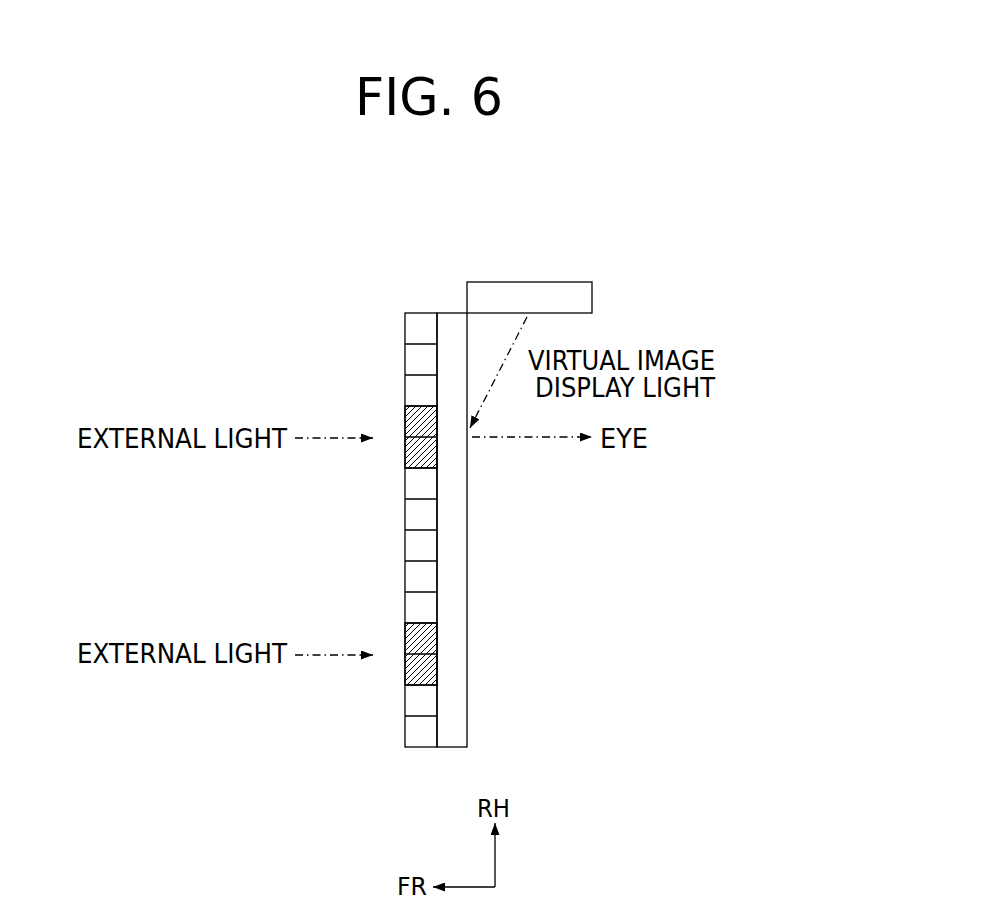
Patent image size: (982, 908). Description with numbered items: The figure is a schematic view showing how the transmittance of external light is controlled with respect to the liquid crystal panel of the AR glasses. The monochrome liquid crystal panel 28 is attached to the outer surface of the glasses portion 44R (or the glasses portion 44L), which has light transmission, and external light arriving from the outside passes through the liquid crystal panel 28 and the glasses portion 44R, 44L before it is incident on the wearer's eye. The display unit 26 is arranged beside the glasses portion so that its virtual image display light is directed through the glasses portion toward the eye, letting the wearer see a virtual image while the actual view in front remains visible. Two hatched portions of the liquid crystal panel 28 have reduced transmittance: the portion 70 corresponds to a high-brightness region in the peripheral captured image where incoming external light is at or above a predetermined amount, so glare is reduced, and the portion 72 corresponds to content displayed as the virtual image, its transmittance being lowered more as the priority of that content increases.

The display unit 26 is at (578, 298).
The monochrome liquid crystal panel 28 is at (418, 308).
The right glasses portion 44R is at (543, 530).
The left glasses portion 44L is at (453, 698).
The reduced-transmittance portion corresponding to high-brightness region 70 is at (387, 675).
The reduced-transmittance portion corresponding to displayed content 72 is at (387, 455).